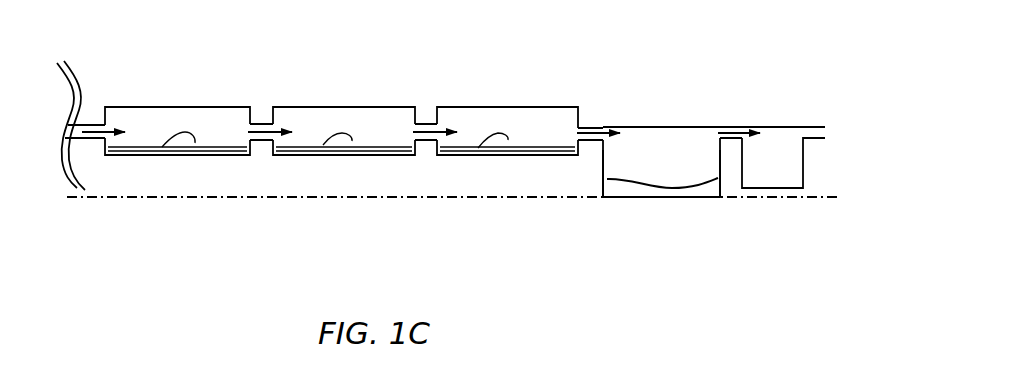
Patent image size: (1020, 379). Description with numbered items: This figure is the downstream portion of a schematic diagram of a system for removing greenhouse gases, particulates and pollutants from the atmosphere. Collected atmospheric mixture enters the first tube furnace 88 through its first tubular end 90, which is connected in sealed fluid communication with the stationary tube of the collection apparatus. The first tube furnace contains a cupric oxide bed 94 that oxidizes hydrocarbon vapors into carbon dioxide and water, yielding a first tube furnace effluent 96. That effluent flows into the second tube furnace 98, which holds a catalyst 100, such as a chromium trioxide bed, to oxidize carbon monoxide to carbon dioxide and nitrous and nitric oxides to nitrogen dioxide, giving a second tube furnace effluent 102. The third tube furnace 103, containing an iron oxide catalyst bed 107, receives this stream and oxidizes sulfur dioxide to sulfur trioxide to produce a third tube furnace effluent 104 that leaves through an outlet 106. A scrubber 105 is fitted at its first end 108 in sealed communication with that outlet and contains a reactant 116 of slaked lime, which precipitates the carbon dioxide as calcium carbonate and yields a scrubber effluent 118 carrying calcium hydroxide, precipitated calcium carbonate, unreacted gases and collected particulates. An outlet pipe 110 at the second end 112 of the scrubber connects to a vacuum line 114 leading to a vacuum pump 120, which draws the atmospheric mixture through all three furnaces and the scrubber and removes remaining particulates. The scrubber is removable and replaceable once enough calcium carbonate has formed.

The first tube furnace 88 is at (187, 100).
The first tubular end 90 is at (90, 123).
The cupric oxide bed 94 is at (195, 143).
The first tube furnace effluent 96 is at (262, 127).
The second tube furnace 98 is at (342, 93).
The catalyst 100 is at (352, 141).
The second tube furnace effluent 102 is at (430, 136).
The third tube furnace 103 is at (508, 93).
The third tube furnace effluent 104 is at (597, 127).
The scrubber 105 is at (670, 82).
The outlet 106 is at (587, 127).
The heater of third chamber 107 is at (508, 140).
The first end 108 is at (602, 157).
The outlet pipe 110 is at (722, 126).
The second end 112 is at (724, 157).
The vacuum line 114 is at (740, 125).
The reactant 116 is at (633, 188).
The scrubber effluent 118 is at (677, 160).
The vacuum pump 120 is at (775, 170).